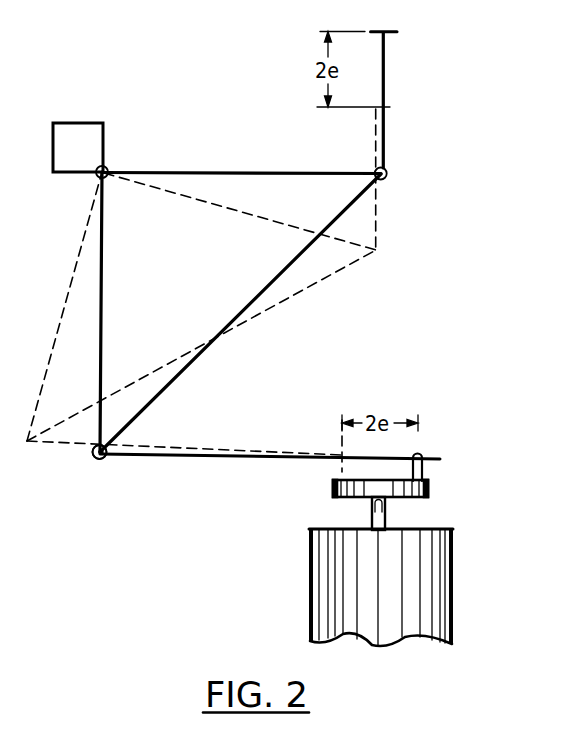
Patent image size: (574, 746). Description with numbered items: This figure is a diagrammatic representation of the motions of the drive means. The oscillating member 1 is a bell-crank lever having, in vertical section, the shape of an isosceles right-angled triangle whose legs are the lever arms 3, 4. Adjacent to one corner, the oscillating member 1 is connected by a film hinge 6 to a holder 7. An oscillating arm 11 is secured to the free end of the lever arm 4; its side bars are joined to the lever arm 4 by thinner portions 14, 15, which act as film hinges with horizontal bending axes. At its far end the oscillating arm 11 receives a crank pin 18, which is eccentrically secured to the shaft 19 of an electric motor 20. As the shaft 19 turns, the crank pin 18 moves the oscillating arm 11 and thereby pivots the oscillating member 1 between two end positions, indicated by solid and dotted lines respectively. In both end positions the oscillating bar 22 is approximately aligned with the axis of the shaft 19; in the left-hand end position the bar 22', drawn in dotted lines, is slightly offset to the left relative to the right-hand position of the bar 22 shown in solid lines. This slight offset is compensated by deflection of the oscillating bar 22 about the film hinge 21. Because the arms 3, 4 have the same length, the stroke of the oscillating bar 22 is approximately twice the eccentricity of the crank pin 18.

The oscillating member 1 is at (223, 269).
The lever arm 3 is at (233, 172).
The lever arm 4 is at (102, 310).
The film hinge 6 is at (107, 168).
The holder 7 is at (78, 134).
The oscillating arm 11 is at (297, 456).
The thinner portion 14 is at (99, 459).
The thinner portion 15 is at (101, 484).
The crank pin 18 is at (423, 470).
The shaft 19 is at (385, 516).
The electric motor 20 is at (440, 581).
The film hinge 21 is at (388, 172).
The oscillating bar 22 is at (407, 100).
The oscillating bar 22' is at (415, 179).